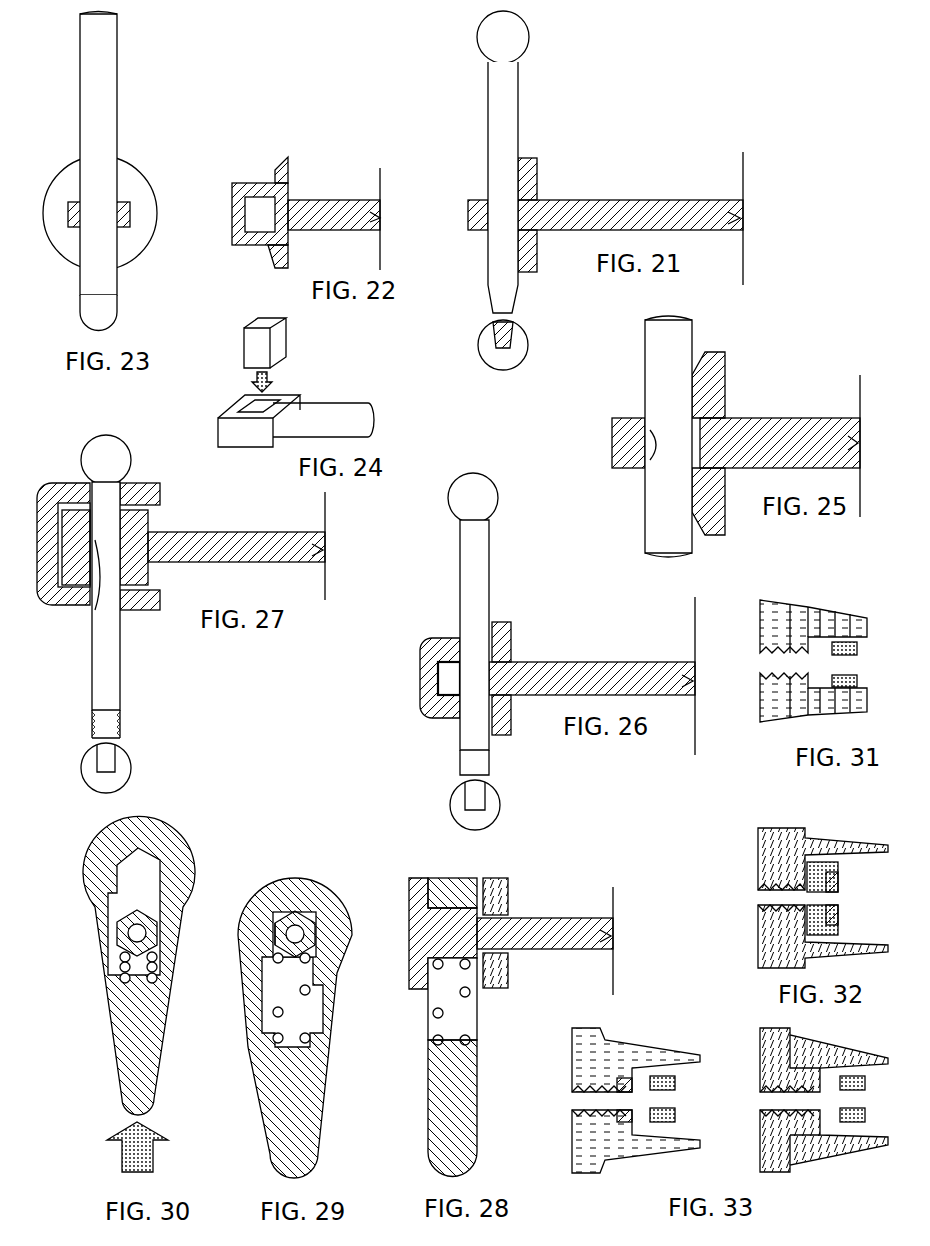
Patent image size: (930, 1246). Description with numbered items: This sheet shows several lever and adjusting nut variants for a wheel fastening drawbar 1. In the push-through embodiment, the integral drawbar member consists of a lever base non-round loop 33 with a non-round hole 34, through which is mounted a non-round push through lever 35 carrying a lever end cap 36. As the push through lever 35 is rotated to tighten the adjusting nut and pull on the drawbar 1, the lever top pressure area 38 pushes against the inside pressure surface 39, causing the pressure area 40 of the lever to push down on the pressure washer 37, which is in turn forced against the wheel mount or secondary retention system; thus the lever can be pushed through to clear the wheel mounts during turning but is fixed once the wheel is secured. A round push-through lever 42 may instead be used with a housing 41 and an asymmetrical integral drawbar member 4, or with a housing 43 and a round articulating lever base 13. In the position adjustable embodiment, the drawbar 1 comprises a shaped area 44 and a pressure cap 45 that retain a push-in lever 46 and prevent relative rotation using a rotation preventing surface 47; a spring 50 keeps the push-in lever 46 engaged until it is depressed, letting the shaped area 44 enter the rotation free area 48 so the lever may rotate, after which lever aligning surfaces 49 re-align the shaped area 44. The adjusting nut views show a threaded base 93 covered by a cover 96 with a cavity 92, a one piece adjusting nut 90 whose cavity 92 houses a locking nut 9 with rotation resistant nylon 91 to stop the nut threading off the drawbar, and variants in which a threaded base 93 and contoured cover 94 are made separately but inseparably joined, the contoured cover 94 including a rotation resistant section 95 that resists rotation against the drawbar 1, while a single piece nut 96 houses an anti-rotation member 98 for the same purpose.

In FIG. 22, the drawbar 1 is at (318, 210).
In FIG. 21, the drawbar 1 is at (668, 212).
In FIG. 24, the drawbar 1 is at (335, 412).
In FIG. 25, the drawbar 1 is at (798, 425).
In FIG. 27, the drawbar 1 is at (265, 545).
In FIG. 26, the drawbar 1 is at (630, 680).
In FIG. 28, the drawbar 1 is at (556, 928).
In FIG. 26, the asymmetrical integral drawbar member 4 is at (445, 678).
In FIG. 31, the locking nut 9 is at (853, 662).
In FIG. 32, the locking nut 9 is at (840, 868).
In FIG. 33, the locking nut 9 is at (676, 1080).
In FIG. 27, the round articulating lever base 13 is at (75, 578).
In FIG. 23, the lever base non-round loop 33 is at (68, 212).
In FIG. 22, the lever base non-round loop 33 is at (252, 192).
In FIG. 21, the lever base non-round loop 33 is at (474, 212).
In FIG. 24, the lever base non-round loop 33 is at (235, 410).
In FIG. 22, the non-round hole 34 is at (260, 210).
In FIG. 24, the non-round hole 34 is at (255, 418).
In FIG. 23, the non-round push through lever 35 is at (105, 88).
In FIG. 21, the non-round push through lever 35 is at (503, 105).
In FIG. 24, the non-round push through lever 35 is at (280, 335).
In FIG. 25, the non-round push through lever 35 is at (682, 345).
In FIG. 27, the non-round push through lever 35 is at (106, 586).
In FIG. 23, the lever end cap 36 is at (105, 316).
In FIG. 21, the lever end cap 36 is at (520, 350).
In FIG. 27, the lever end cap 36 is at (120, 780).
In FIG. 26, the lever end cap 36 is at (488, 815).
In FIG. 23, the pressure washer 37 is at (140, 195).
In FIG. 22, the pressure washer 37 is at (282, 262).
In FIG. 21, the pressure washer 37 is at (532, 175).
In FIG. 25, the pressure washer 37 is at (706, 366).
In FIG. 25, the lever top pressure area 38 is at (632, 430).
In FIG. 27, the lever top pressure area 38 is at (76, 520).
In FIG. 25, the inside pressure surface 39 is at (652, 448).
In FIG. 27, the inside pressure surface 39 is at (100, 565).
In FIG. 25, the pressure area 40 is at (700, 495).
In FIG. 27, the pressure area 40 is at (125, 598).
In FIG. 26, the housing 41 is at (445, 645).
In FIG. 27, the round push-through lever 42 is at (135, 540).
In FIG. 26, the round push-through lever 42 is at (475, 588).
In FIG. 27, the housing 43 is at (68, 490).
In FIG. 29, the shaped area 44 is at (298, 913).
In FIG. 28, the shaped area 44 is at (450, 925).
In FIG. 28, the pressure cap 45 is at (417, 925).
In FIG. 30, the push-in lever 46 is at (150, 1075).
In FIG. 29, the push-in lever 46 is at (313, 1107).
In FIG. 28, the push-in lever 46 is at (470, 1115).
In FIG. 30, the rotation preventing surface 47 is at (122, 868).
In FIG. 29, the rotation preventing surface 47 is at (277, 913).
In FIG. 30, the rotation free area 48 is at (113, 945).
In FIG. 29, the rotation free area 48 is at (313, 1018).
In FIG. 28, the rotation free area 48 is at (455, 1022).
In FIG. 29, the lever aligning surfaces 49 is at (260, 970).
In FIG. 30, the spring 50 is at (122, 978).
In FIG. 29, the spring 50 is at (273, 1013).
In FIG. 32, the one piece adjusting nut 90 is at (770, 862).
In FIG. 32, the rotation resistant nylon 91 is at (840, 888).
In FIG. 33, the rotation resistant nylon 91 is at (676, 1112).
In FIG. 31, the cavity 92 is at (822, 640).
In FIG. 32, the cavity 92 is at (852, 928).
In FIG. 33, the cavity 92 is at (688, 1128).
In FIG. 31, the threaded base 93 is at (758, 622).
In FIG. 33, the threaded base 93 is at (775, 1070).
In FIG. 33, the contoured cover 94 is at (830, 1052).
In FIG. 33, the rotation resistant section 95 is at (810, 1092).
In FIG. 31, the cover 96 is at (795, 615).
In FIG. 33, the cover 96 is at (620, 1050).
In FIG. 33, the anti-rotation member 98 is at (585, 1092).